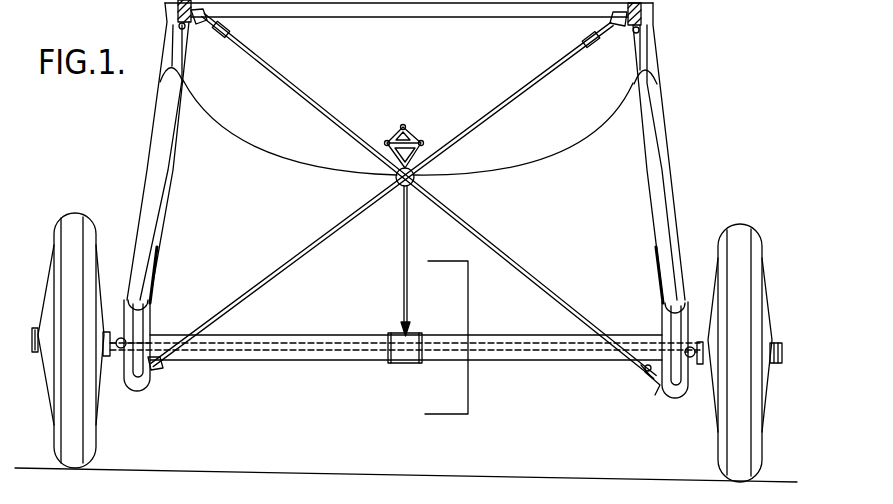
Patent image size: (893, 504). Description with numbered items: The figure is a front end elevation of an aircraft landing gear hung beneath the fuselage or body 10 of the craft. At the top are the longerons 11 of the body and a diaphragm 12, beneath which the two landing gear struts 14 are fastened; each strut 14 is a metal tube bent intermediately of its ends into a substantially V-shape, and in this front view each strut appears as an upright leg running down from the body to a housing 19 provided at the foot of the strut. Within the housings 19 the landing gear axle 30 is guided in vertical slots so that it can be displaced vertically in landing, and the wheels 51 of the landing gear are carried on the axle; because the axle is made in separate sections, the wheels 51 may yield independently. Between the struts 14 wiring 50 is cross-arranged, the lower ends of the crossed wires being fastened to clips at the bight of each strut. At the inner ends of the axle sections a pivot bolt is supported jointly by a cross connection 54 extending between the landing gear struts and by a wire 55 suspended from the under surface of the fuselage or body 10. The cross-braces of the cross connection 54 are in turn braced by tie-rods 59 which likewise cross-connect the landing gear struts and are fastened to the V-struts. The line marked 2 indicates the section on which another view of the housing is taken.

The section line 2- 2 is at (437, 339).
The fuselage or body 10 is at (256, 150).
The longerons 11 is at (177, 10).
The diaphragm 12 is at (470, 17).
The landing gear strut 14 is at (147, 183).
The housing 19 is at (130, 393).
The landing gear axle 30 is at (417, 349).
The wiring 50 is at (520, 97).
The wheels 51 is at (78, 450).
The cross connection 54 is at (541, 362).
The wire 55 is at (402, 218).
The tie-rod 59 is at (506, 355).